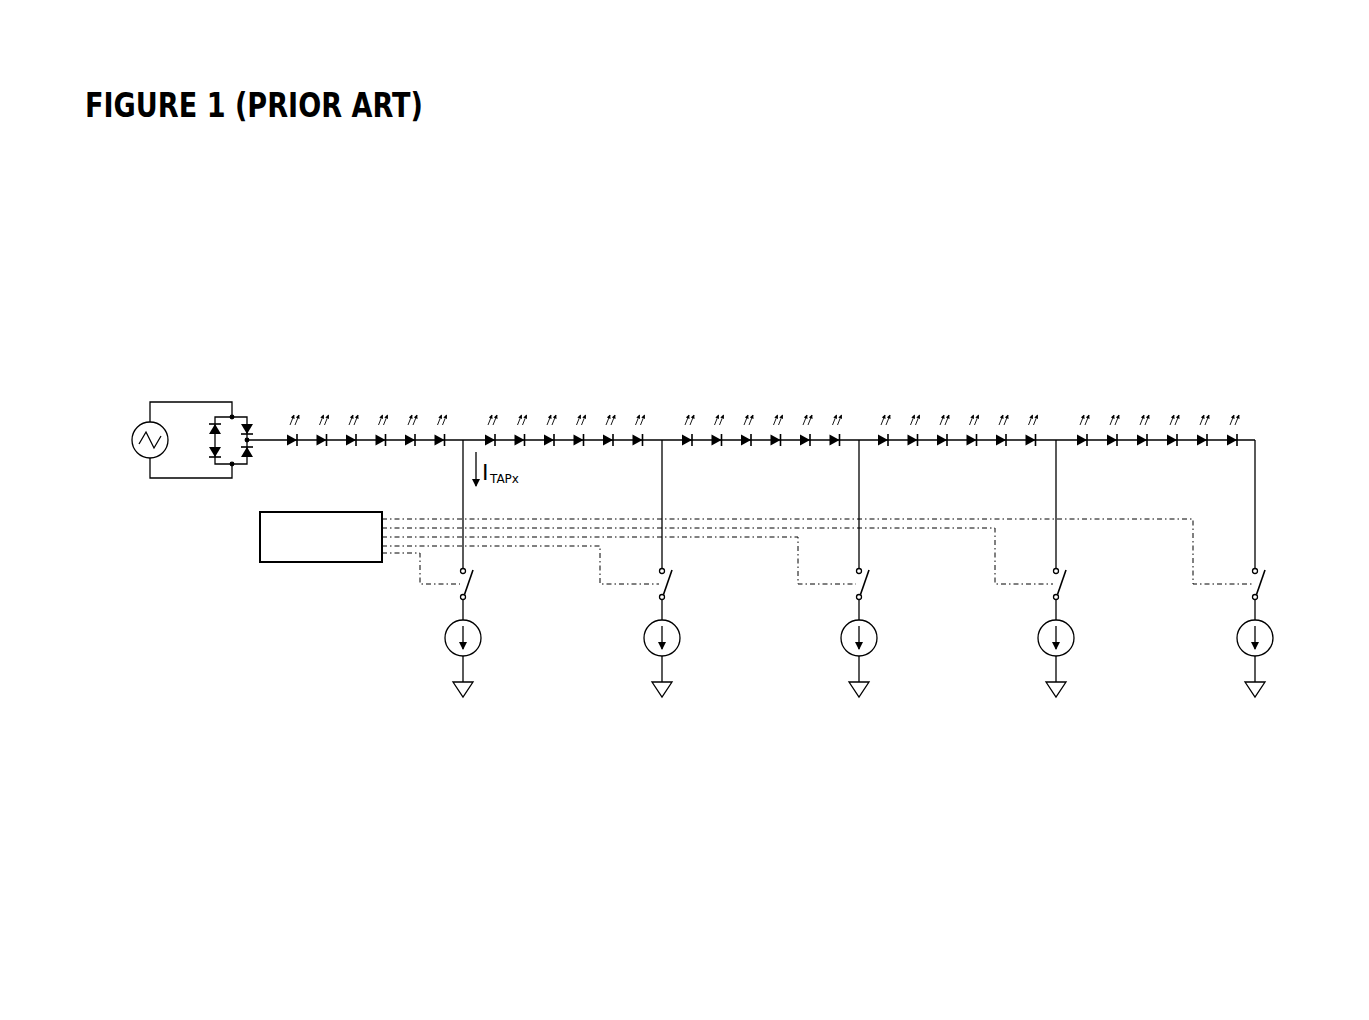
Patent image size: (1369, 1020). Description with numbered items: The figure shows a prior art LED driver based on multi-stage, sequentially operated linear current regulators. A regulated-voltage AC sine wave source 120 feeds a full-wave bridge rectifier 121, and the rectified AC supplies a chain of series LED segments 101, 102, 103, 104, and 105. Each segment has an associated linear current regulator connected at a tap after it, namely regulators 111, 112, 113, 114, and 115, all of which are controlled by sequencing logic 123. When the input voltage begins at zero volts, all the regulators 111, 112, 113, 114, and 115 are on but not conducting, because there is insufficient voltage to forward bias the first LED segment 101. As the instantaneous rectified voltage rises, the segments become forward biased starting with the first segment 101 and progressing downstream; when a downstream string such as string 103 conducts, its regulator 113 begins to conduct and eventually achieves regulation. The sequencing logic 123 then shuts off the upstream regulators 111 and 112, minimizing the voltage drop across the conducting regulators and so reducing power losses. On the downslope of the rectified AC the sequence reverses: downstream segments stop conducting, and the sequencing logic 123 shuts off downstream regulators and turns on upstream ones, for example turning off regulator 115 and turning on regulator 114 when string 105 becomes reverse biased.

The first LED segment 101 is at (333, 392).
The second LED segment 102 is at (531, 392).
The third LED segment 103 is at (729, 392).
The fourth LED segment 104 is at (927, 392).
The fifth LED segment 105 is at (1125, 392).
The linear current regulator 111 is at (491, 653).
The linear current regulator 112 is at (690, 653).
The linear current regulator 113 is at (887, 653).
The linear current regulator 114 is at (1084, 653).
The linear current regulator 115 is at (1282, 653).
The AC sine wave source 120 is at (130, 458).
The full-wave bridge rectifier 121 is at (210, 464).
The sequencing logic 123 is at (329, 571).